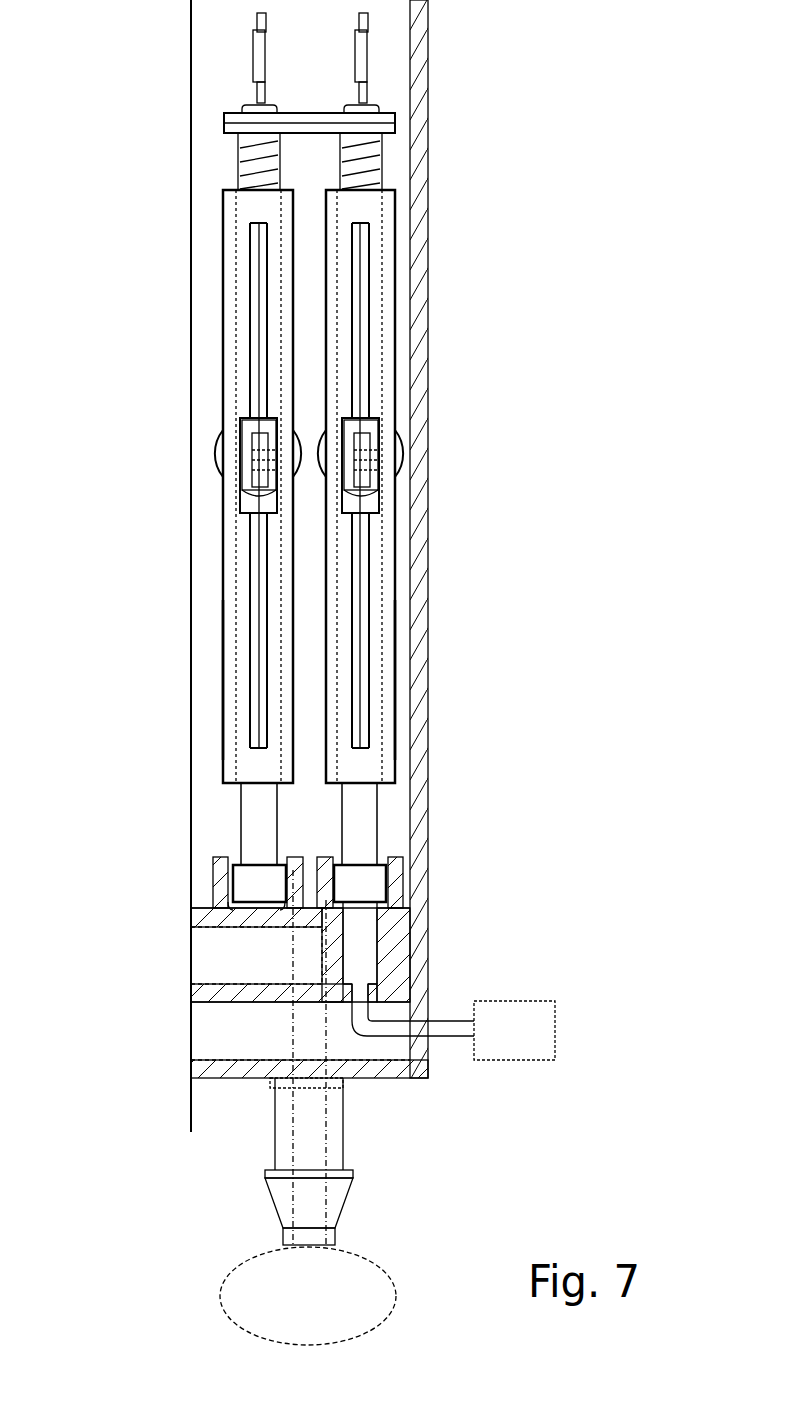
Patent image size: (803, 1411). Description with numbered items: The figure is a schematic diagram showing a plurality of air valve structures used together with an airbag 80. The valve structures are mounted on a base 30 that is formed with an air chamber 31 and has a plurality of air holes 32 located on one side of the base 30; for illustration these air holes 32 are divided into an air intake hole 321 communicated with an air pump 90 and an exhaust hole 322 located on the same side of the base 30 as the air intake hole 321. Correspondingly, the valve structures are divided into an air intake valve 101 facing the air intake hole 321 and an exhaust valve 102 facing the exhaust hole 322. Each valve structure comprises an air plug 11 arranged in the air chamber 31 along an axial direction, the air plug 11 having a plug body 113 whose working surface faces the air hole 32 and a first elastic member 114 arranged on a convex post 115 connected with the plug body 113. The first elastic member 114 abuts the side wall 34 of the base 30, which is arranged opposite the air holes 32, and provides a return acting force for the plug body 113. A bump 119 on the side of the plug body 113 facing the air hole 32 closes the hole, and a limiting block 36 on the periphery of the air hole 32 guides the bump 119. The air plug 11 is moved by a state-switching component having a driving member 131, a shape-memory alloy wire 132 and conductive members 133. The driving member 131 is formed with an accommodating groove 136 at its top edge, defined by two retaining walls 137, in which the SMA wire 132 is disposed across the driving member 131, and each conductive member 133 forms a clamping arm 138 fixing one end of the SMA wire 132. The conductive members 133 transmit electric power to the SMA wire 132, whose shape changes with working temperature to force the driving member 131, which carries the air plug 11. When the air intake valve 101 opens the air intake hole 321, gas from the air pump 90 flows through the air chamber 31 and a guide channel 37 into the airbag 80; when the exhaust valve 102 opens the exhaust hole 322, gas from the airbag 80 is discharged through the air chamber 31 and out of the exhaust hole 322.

The air plug 11 is at (398, 456).
The base 30 is at (190, 402).
The air chamber 31 is at (207, 803).
The air hole 32 is at (293, 908).
The side wall 34 is at (224, 124).
The limiting block 36 is at (392, 857).
The guide channel 37 is at (273, 1125).
The airbag 80 is at (225, 1275).
The air pump 90 is at (515, 1062).
The air intake valve 101 is at (414, 677).
The exhaust valve 102 is at (205, 677).
The plug body 113 is at (378, 486).
The first elastic member 114 is at (381, 181).
The convex post 115 is at (378, 135).
The bump 119 is at (368, 883).
The driving member 131 is at (421, 447).
The shape-memory alloy wire 132 is at (370, 575).
The conductive member 133 is at (384, 30).
The accommodating groove 136 is at (384, 424).
The retaining wall 137 is at (364, 474).
The clamping arm 138 is at (367, 60).
The air intake hole 321 is at (385, 917).
The exhaust hole 322 is at (240, 918).